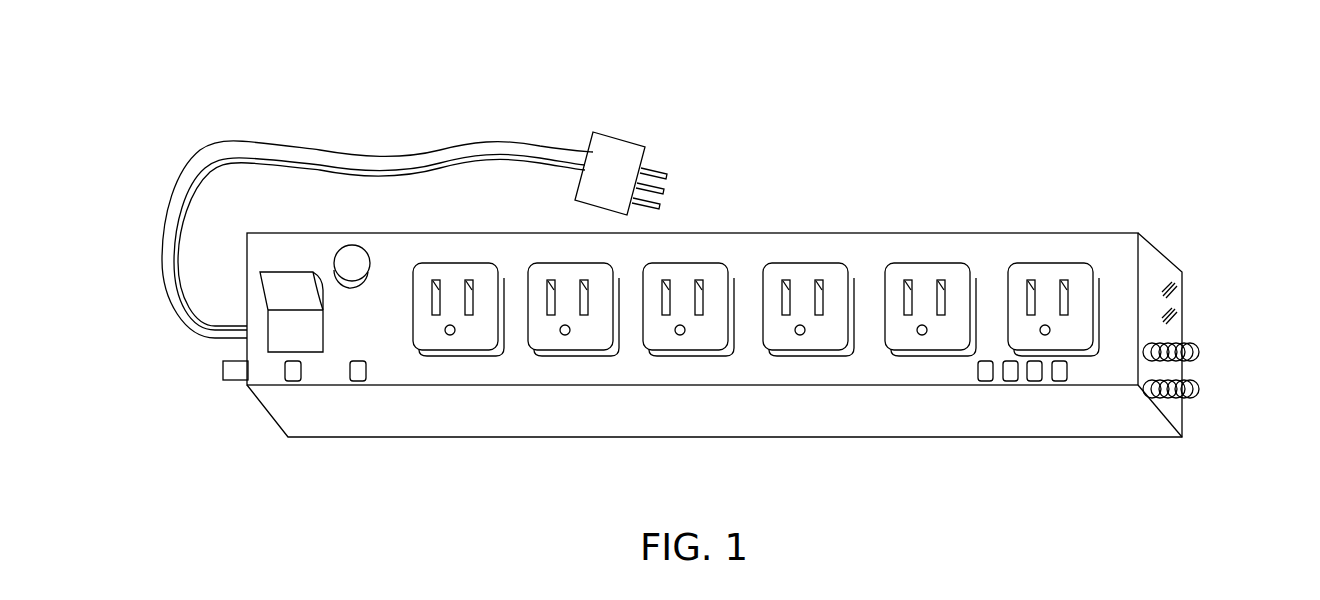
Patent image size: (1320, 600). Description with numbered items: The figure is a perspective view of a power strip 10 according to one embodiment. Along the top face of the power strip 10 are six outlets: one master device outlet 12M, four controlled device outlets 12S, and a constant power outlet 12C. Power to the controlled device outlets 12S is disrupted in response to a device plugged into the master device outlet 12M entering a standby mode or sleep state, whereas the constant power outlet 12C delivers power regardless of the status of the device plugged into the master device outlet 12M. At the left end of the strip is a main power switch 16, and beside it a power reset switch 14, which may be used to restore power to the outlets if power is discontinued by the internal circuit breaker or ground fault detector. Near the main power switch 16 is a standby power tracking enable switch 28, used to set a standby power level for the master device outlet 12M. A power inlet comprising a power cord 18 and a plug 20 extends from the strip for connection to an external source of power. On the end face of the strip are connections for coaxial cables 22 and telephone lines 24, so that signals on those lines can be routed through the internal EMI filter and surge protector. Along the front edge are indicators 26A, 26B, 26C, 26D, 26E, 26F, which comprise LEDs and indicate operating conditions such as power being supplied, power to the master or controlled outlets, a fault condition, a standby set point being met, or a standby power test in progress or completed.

The power strip 10 is at (992, 135).
The master device outlet 12M is at (465, 355).
The controlled device outlets 12S is at (577, 357).
The constant power outlet 12C is at (1038, 265).
The power reset switch 14 is at (223, 380).
The main power switch 16 is at (293, 272).
The power cord 18 is at (452, 148).
The plug 20 is at (633, 143).
The connections for coaxial cables 22 is at (1192, 362).
The connections for telephone lines 24 is at (1168, 318).
The indicator 26A is at (292, 383).
The indicator 26B is at (358, 383).
The indicator 26C is at (985, 383).
The indicator 26D is at (1010, 383).
The indicator 26E is at (1035, 383).
The indicator 26F is at (1060, 383).
The standby power tracking enable switch 28 is at (350, 244).